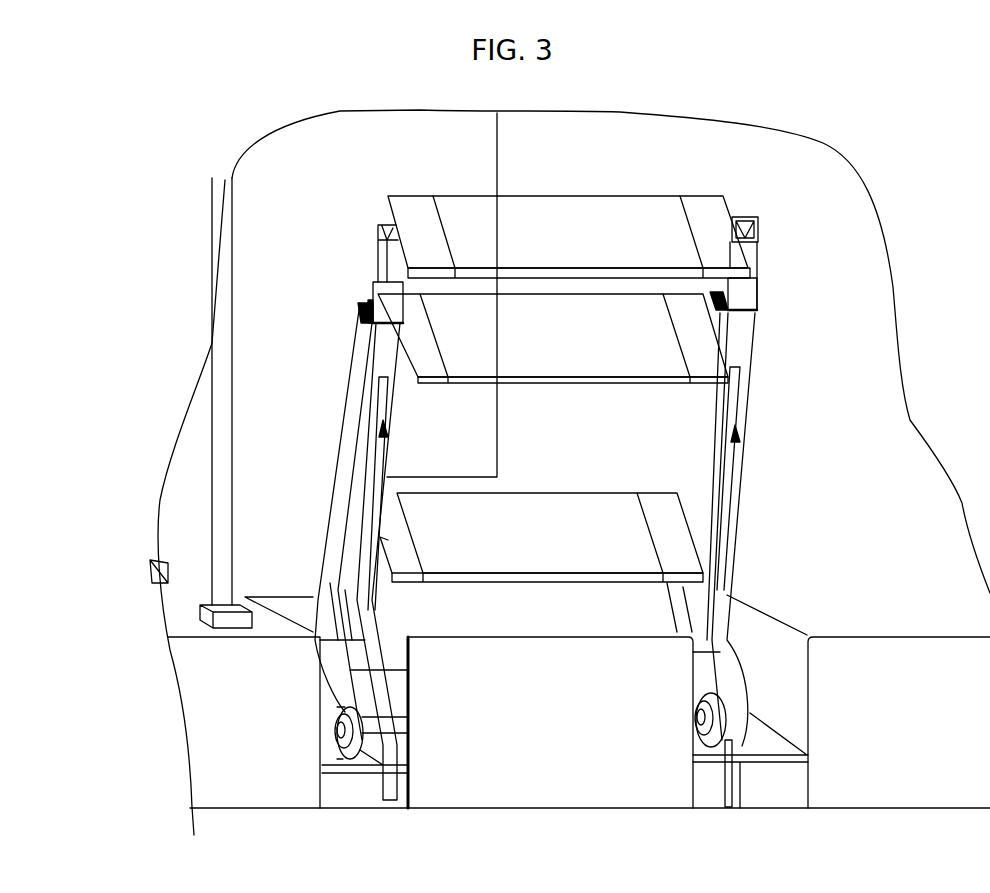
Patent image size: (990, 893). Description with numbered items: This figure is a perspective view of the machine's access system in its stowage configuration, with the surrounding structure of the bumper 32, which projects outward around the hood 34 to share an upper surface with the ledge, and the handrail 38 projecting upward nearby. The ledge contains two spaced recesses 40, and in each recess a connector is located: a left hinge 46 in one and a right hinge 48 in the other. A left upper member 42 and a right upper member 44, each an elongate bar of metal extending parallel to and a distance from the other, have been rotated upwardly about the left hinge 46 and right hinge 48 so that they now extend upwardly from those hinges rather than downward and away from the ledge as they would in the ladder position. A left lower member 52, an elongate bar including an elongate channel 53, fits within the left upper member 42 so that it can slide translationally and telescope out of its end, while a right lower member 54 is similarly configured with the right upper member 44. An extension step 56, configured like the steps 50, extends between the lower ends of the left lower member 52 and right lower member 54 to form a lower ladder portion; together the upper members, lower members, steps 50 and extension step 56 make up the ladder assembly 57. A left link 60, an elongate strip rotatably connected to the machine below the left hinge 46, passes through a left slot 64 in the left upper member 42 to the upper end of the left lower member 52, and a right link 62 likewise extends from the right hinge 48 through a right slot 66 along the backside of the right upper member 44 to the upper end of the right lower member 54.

The bumper 32 is at (261, 705).
The hood 34 is at (364, 160).
The handrail 38 is at (335, 347).
The recesses 40 is at (353, 778).
The left upper member 42 is at (372, 392).
The right upper member 44 is at (745, 345).
The left hinge 46 is at (336, 730).
The right hinge 48 is at (723, 720).
The steps 50 is at (554, 333).
The left lower member 52 is at (388, 291).
The elongate channel 53 is at (358, 312).
The right lower member 54 is at (743, 293).
The extension step 56 is at (559, 241).
The ladder assembly 57 is at (777, 468).
The left link 60 is at (367, 600).
The right link 62 is at (720, 612).
The left slot 64 is at (380, 450).
The right slot 66 is at (738, 450).